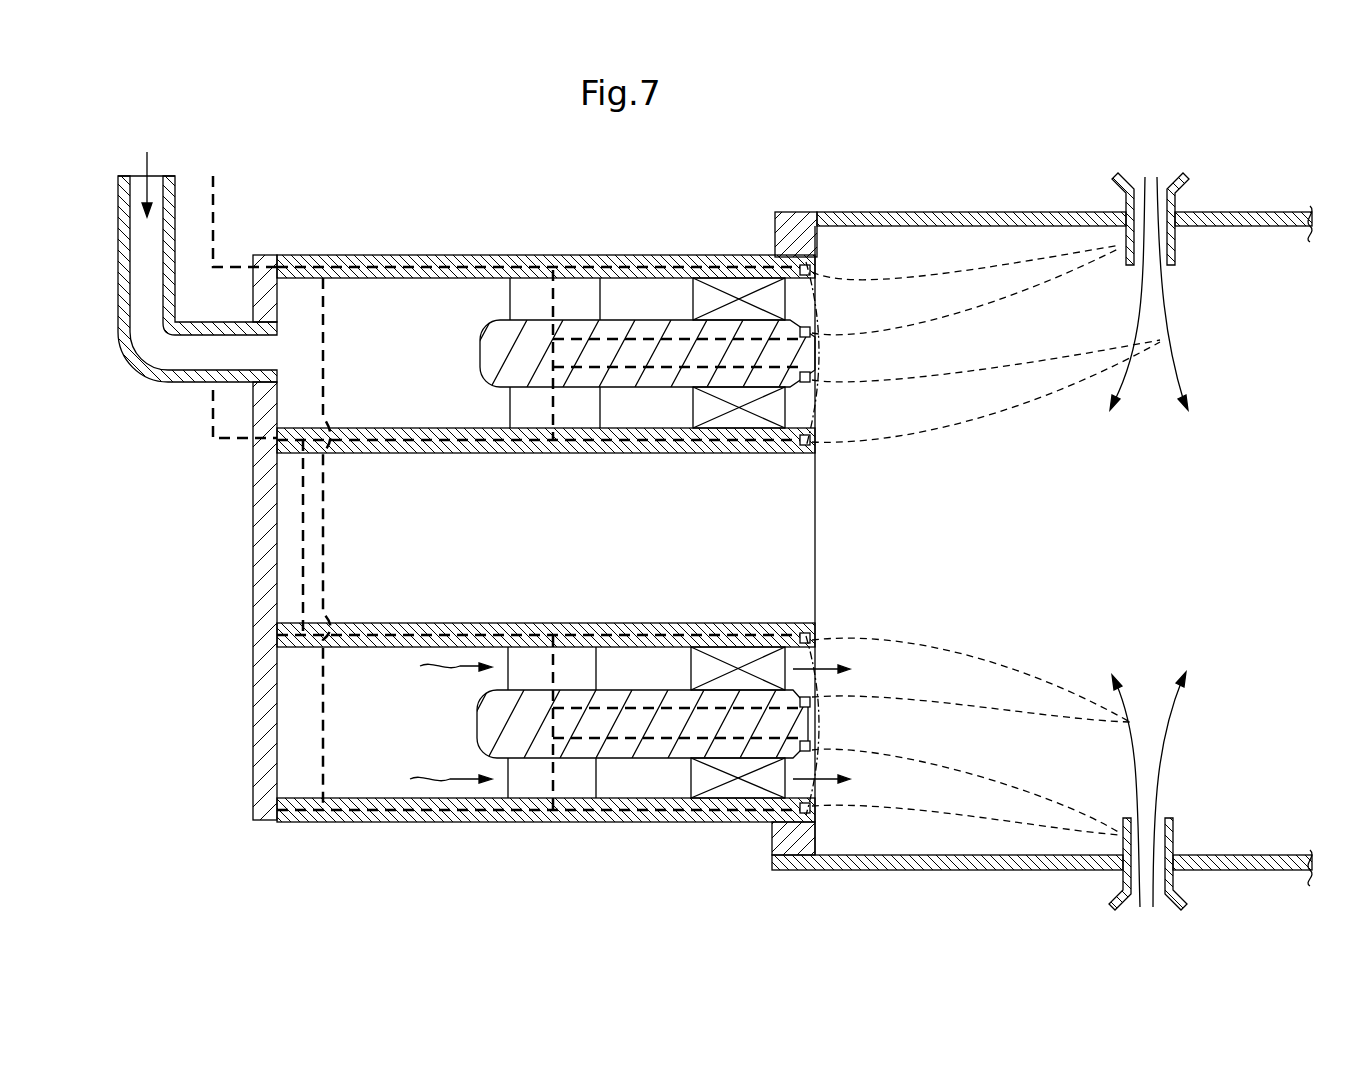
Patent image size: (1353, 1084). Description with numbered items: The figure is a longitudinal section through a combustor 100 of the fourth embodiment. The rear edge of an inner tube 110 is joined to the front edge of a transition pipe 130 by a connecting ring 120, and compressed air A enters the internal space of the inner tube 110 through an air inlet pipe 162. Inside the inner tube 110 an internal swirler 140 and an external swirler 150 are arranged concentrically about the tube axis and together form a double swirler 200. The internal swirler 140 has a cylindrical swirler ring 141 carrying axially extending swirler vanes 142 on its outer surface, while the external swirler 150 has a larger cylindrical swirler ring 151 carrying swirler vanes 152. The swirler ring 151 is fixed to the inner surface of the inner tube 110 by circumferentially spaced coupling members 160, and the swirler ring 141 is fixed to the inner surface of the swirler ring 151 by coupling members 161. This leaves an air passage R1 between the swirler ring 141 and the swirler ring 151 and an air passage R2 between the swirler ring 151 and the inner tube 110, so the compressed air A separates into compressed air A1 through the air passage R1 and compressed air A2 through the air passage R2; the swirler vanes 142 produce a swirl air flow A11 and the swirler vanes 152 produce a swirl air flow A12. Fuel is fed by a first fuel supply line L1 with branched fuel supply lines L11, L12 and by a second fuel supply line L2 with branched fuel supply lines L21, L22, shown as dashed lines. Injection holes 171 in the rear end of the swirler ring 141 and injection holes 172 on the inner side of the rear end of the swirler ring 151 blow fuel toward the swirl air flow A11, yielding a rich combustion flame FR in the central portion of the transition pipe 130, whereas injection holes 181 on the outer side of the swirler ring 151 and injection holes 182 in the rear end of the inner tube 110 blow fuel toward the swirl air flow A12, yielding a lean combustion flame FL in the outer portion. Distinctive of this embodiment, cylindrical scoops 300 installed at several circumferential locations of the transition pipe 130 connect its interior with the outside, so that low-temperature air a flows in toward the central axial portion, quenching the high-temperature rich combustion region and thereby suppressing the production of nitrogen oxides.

The combustor 100 is at (770, 133).
The inner tube 110 is at (545, 255).
The connecting ring 120 is at (793, 212).
The transition pipe 130 is at (984, 212).
The internal swirler 140 is at (838, 459).
The swirler ring 141 is at (802, 454).
The swirler vanes 142 is at (741, 424).
The external swirler 150 is at (869, 344).
The swirler ring 151 is at (823, 356).
The swirler vanes 152 is at (740, 290).
The coupling members 160 is at (510, 302).
The coupling members 161 is at (510, 402).
The air inlet pipe 162 is at (118, 197).
The injection holes 171 is at (813, 440).
The injection holes 172 is at (813, 378).
The injection holes 181 is at (813, 333).
The injection holes 182 is at (814, 270).
The double swirler 200 is at (855, 603).
The scoops 300 is at (1187, 182).
The first fuel supply line L1 is at (213, 415).
The second fuel supply line L2 is at (215, 180).
The fuel supply line L11 is at (677, 441).
The fuel supply line L12 is at (652, 368).
The fuel supply line L21 is at (622, 340).
The fuel supply line L22 is at (625, 267).
The lean combustion flame FL is at (942, 287).
The rich combustion flame FR is at (977, 400).
The compressed air A is at (148, 173).
The compressed air A1 is at (445, 664).
The compressed air A2 is at (436, 779).
The swirl air flow A11 is at (845, 670).
The swirl air flow A12 is at (845, 780).
The air passage R1 is at (545, 678).
The air passage R2 is at (545, 766).
The air a is at (1149, 542).